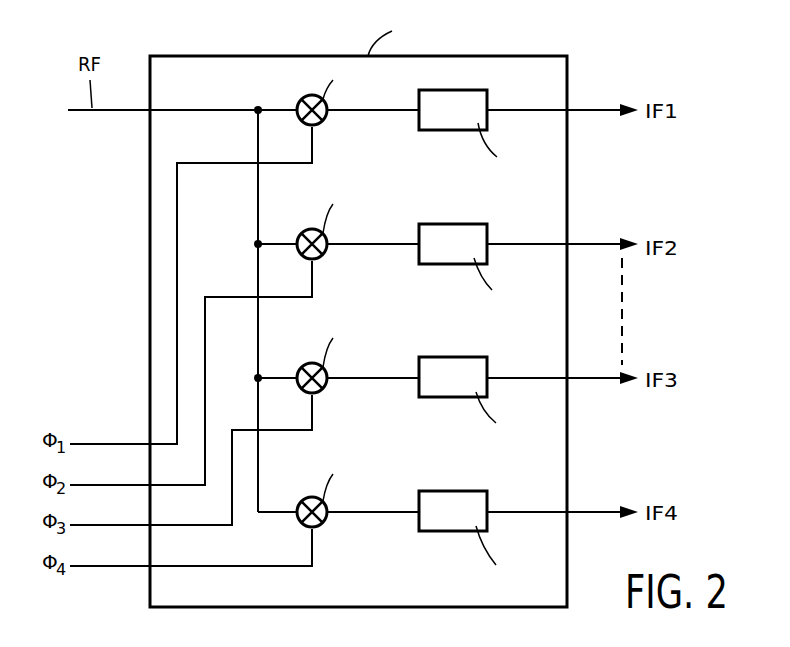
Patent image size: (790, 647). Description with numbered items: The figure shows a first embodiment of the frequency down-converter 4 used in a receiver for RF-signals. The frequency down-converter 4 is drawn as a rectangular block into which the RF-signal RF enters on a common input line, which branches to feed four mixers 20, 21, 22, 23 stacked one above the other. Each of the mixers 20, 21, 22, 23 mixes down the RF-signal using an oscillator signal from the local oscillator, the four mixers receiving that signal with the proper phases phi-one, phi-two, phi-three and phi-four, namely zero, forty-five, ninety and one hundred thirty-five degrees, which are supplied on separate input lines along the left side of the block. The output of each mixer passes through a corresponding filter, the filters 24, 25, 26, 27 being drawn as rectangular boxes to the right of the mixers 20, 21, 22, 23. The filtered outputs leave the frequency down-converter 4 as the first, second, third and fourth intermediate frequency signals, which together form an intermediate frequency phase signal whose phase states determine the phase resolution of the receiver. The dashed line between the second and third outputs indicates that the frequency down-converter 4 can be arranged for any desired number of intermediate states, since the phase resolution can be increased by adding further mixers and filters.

The frequency down-converter 4 is at (567, 83).
The mixer 20 is at (321, 122).
The mixer 21 is at (321, 256).
The mixer 22 is at (321, 390).
The mixer 23 is at (321, 524).
The filter 24 is at (453, 132).
The filter 25 is at (453, 266).
The filter 26 is at (453, 400).
The filter 27 is at (453, 534).